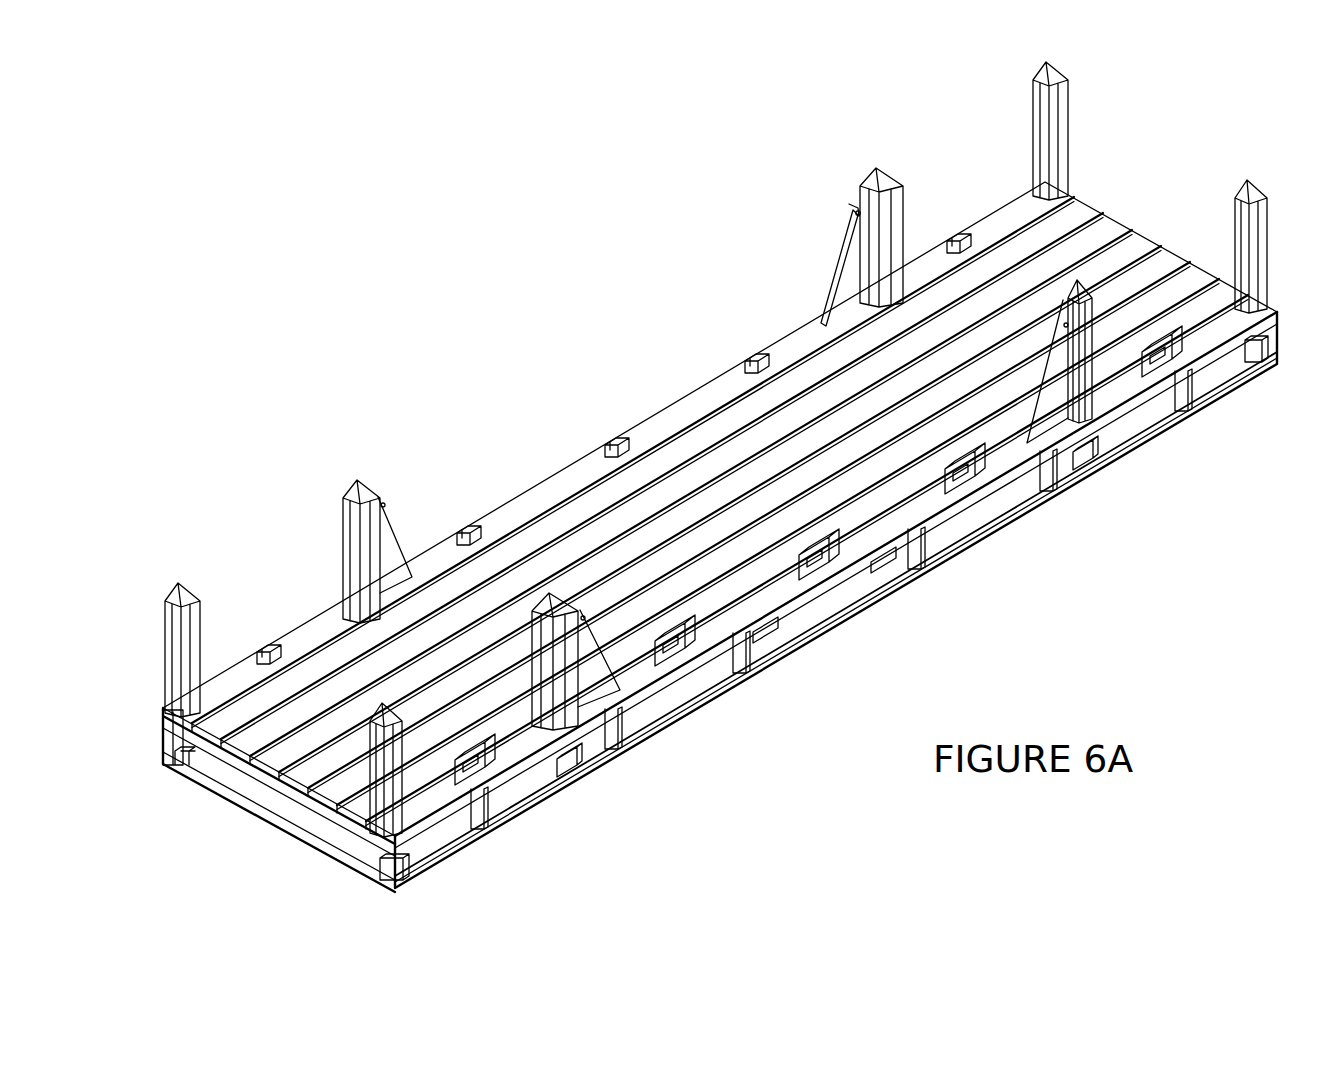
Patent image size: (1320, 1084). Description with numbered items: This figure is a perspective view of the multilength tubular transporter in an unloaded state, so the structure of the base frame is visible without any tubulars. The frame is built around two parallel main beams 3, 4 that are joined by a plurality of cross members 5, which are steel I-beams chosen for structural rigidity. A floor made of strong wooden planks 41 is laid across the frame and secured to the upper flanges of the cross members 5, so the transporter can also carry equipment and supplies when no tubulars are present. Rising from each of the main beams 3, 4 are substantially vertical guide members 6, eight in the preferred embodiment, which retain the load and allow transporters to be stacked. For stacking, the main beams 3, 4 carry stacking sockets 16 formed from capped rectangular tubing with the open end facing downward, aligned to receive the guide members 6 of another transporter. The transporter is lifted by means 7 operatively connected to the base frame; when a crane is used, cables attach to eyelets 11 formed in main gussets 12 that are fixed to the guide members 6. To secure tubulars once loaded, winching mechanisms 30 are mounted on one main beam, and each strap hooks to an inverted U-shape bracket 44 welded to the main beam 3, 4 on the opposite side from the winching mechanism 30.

The main beam 3 is at (556, 466).
The main beam 4 is at (848, 610).
The cross member 5 is at (258, 810).
The guide member 6 is at (340, 500).
The means for enabling transporter to be lifted 7 is at (836, 212).
The eyelet 11 is at (855, 212).
The main gusset 12 is at (847, 288).
The stacking socket 16 is at (1257, 372).
The winching mechanism 30 is at (975, 470).
The plank 41 is at (690, 443).
The inverted U-shape bracket 44 is at (757, 355).